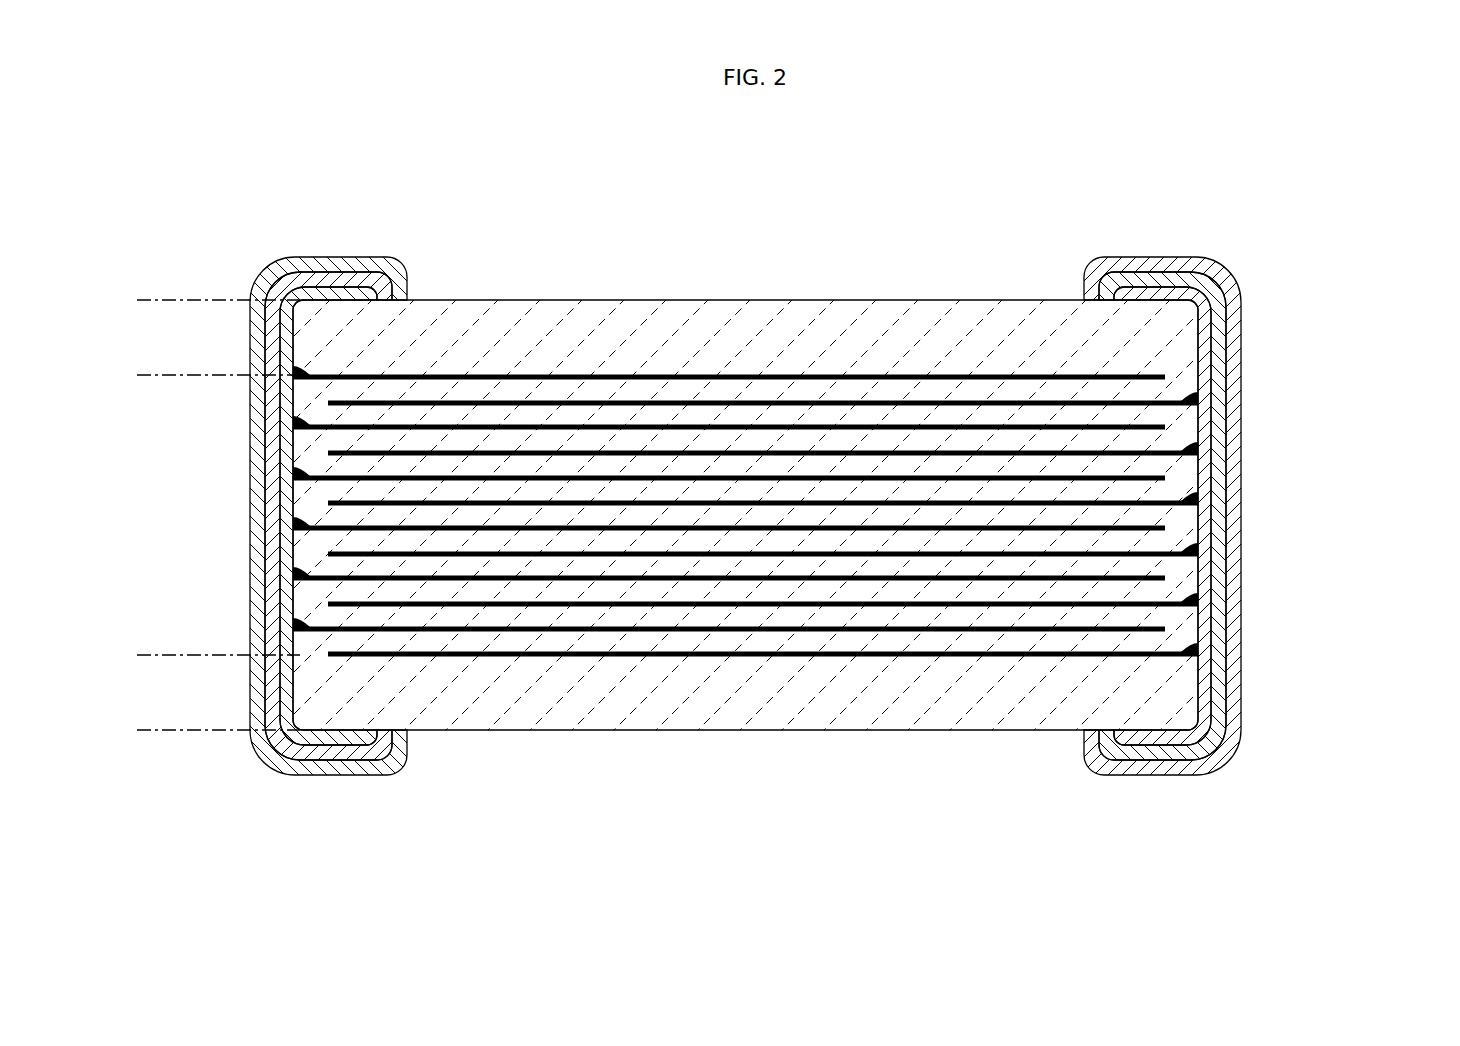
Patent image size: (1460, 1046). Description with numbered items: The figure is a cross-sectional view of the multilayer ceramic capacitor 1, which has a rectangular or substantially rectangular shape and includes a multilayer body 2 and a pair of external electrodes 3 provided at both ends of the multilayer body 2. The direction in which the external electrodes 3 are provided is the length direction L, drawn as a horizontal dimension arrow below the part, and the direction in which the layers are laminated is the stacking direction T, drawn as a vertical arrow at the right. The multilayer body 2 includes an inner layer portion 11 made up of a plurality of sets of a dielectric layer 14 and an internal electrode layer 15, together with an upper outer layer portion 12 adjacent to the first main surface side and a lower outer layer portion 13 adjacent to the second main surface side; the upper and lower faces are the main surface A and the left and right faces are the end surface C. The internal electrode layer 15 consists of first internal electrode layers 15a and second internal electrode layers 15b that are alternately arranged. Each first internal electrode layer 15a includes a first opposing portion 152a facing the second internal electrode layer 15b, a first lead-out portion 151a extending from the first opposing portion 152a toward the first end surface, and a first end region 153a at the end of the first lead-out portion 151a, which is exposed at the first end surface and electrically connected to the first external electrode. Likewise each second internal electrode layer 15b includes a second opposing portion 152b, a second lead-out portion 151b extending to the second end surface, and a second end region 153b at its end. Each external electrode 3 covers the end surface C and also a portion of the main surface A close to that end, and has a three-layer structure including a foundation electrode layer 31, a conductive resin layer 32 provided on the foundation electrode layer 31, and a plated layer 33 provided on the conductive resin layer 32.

The multilayer ceramic capacitor 1 is at (1060, 185).
The multilayer body 2 is at (931, 292).
The external electrode 3 is at (726, 443).
The foundation electrode layer 31 is at (265, 257).
The conductive resin layer 32 is at (312, 272).
The plated layer 33 is at (328, 452).
The inner layer portion 11 is at (635, 510).
The upper outer layer portion 12 is at (125, 300).
The lower outer layer portion 13 is at (125, 655).
The dielectric layer 14 is at (695, 510).
The internal electrode layer 15 is at (858, 296).
The first internal electrode layer 15a is at (565, 205).
The second internal electrode layer 15b is at (1335, 342).
The first lead-out portion 151a is at (340, 374).
The first opposing portion 152a is at (352, 376).
The first end region 153a is at (315, 372).
The second lead-out portion 151b is at (1190, 422).
The second opposing portion 152b is at (1195, 437).
The second end region 153b is at (1195, 380).
The main surface A is at (747, 300).
The end surface C is at (292, 545).
The length direction L is at (309, 845).
The stacking direction T is at (1415, 236).